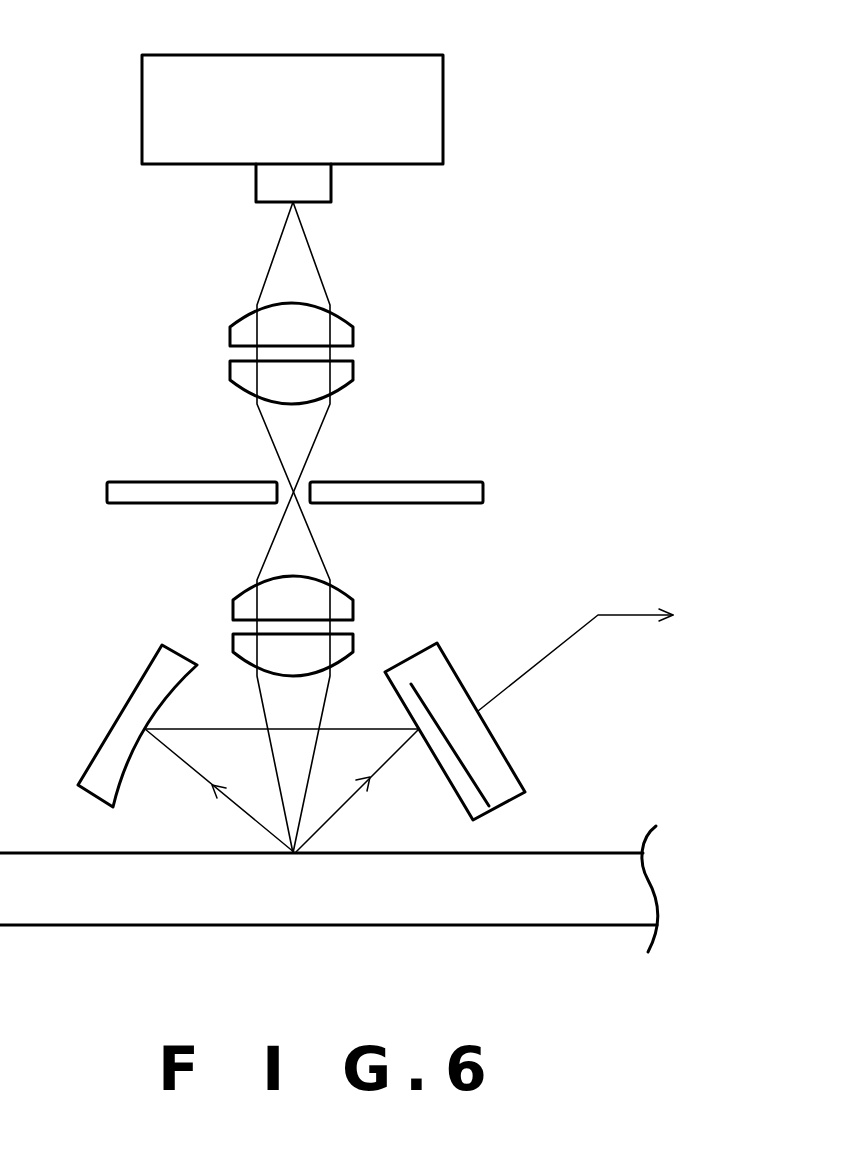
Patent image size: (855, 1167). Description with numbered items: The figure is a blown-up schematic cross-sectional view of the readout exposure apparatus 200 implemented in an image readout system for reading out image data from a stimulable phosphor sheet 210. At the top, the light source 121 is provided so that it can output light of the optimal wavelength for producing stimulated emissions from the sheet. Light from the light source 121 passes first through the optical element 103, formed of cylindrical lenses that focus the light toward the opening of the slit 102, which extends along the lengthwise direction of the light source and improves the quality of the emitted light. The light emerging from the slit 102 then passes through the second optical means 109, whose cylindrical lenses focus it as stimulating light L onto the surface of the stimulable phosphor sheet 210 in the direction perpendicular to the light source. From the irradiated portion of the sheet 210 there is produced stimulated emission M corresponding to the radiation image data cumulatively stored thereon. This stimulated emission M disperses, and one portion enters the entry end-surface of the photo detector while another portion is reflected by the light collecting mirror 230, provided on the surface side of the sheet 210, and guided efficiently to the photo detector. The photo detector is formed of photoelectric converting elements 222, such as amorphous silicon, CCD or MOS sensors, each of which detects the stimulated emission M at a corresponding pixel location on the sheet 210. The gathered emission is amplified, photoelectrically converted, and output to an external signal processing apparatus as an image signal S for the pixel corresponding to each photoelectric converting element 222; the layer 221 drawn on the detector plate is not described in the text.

The readout exposure apparatus 200 is at (537, 125).
The light source 121 is at (142, 121).
The optical element 103 is at (207, 305).
The slit 102 is at (107, 491).
The second optical means 109 is at (220, 673).
The light collecting mirror 230 is at (138, 686).
The photoelectric converting element 222 is at (500, 763).
The reflective layer 221 is at (476, 818).
The stimulable phosphor sheet 210 is at (612, 853).
The stimulating light L is at (328, 702).
The image signal S is at (630, 613).
The stimulated emission M is at (232, 803).